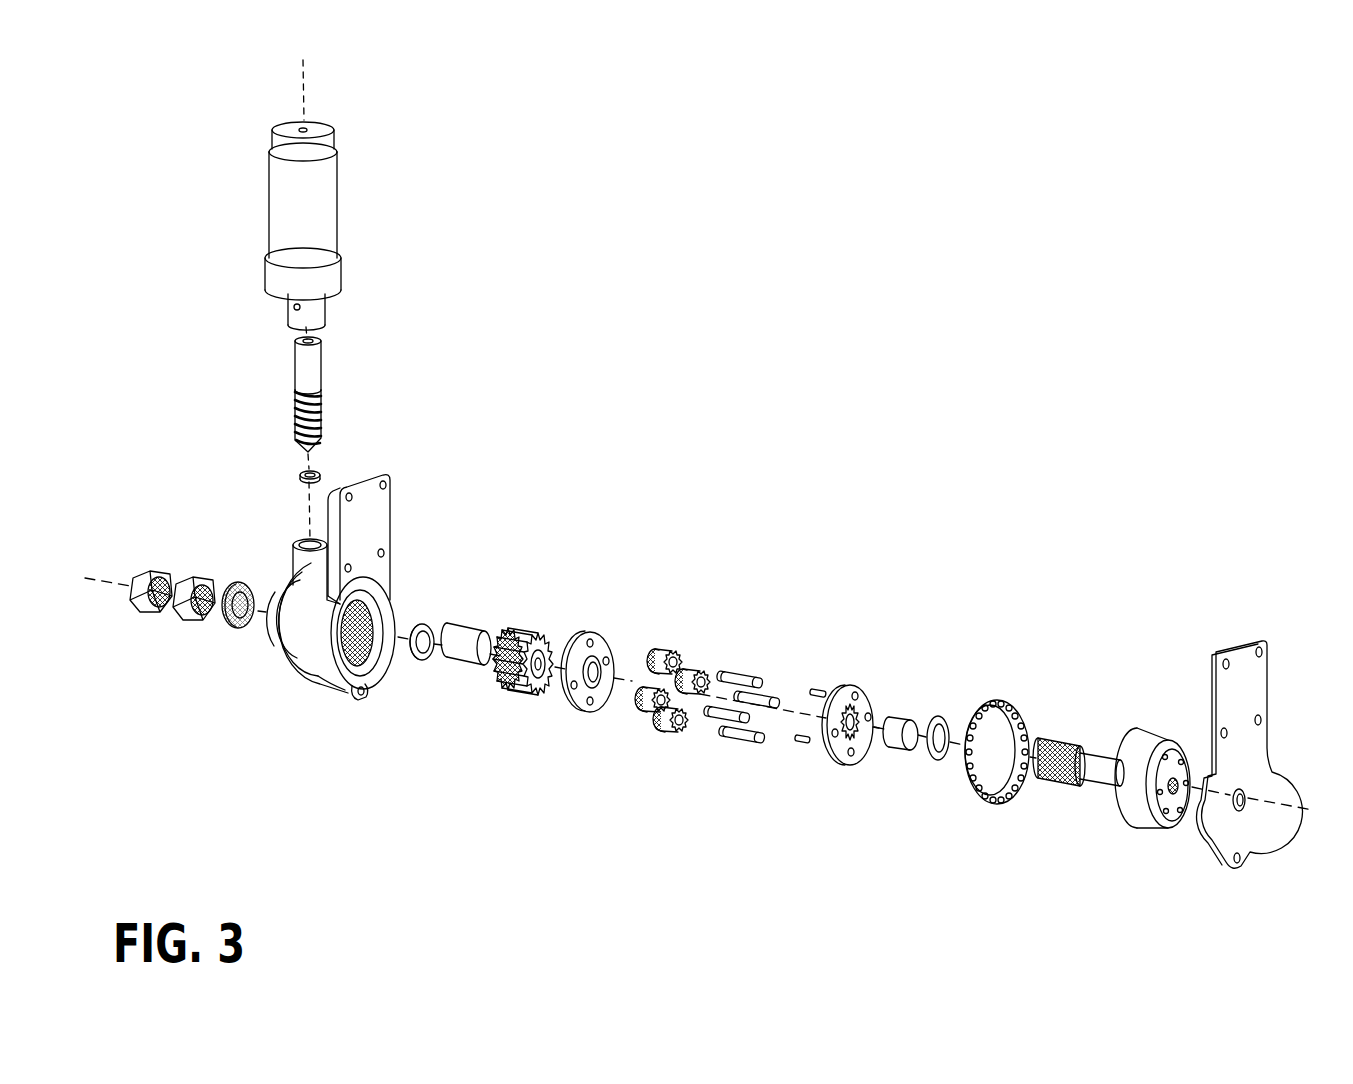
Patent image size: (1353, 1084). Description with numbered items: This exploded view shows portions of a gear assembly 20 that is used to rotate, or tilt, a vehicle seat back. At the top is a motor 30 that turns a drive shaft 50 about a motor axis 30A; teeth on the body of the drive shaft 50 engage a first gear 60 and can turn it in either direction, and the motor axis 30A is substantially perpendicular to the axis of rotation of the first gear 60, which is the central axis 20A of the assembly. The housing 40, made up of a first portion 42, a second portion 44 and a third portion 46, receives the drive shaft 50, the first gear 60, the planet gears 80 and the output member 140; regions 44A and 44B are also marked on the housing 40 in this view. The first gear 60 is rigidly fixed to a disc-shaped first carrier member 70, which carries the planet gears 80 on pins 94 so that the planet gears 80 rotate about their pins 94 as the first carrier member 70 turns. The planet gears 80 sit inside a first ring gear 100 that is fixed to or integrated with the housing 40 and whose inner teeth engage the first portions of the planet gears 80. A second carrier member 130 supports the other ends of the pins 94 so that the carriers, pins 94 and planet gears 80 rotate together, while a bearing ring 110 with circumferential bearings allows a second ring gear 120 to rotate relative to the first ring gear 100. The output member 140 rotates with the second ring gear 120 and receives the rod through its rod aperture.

The gear assembly 20 is at (636, 215).
The central axis 20A is at (1288, 808).
The motor 30 is at (346, 223).
The motor axis 30A is at (304, 98).
The housing 40 is at (329, 599).
The first portion 42 is at (290, 556).
The second portion 44 is at (276, 672).
The housing hub 44A is at (272, 628).
The housing cavity wall 44B is at (320, 664).
The third portion 46 is at (378, 533).
The drive shaft 50 is at (334, 391).
The first gear 60 is at (526, 632).
The first carrier member 70 is at (600, 645).
The planet gears 80 is at (671, 634).
The pins 94 is at (776, 666).
The first ring gear 100 is at (356, 665).
The bearing ring 110 is at (1027, 698).
The second ring gear 120 is at (1111, 715).
The second carrier member 130 is at (878, 687).
The output member 140 is at (1078, 762).